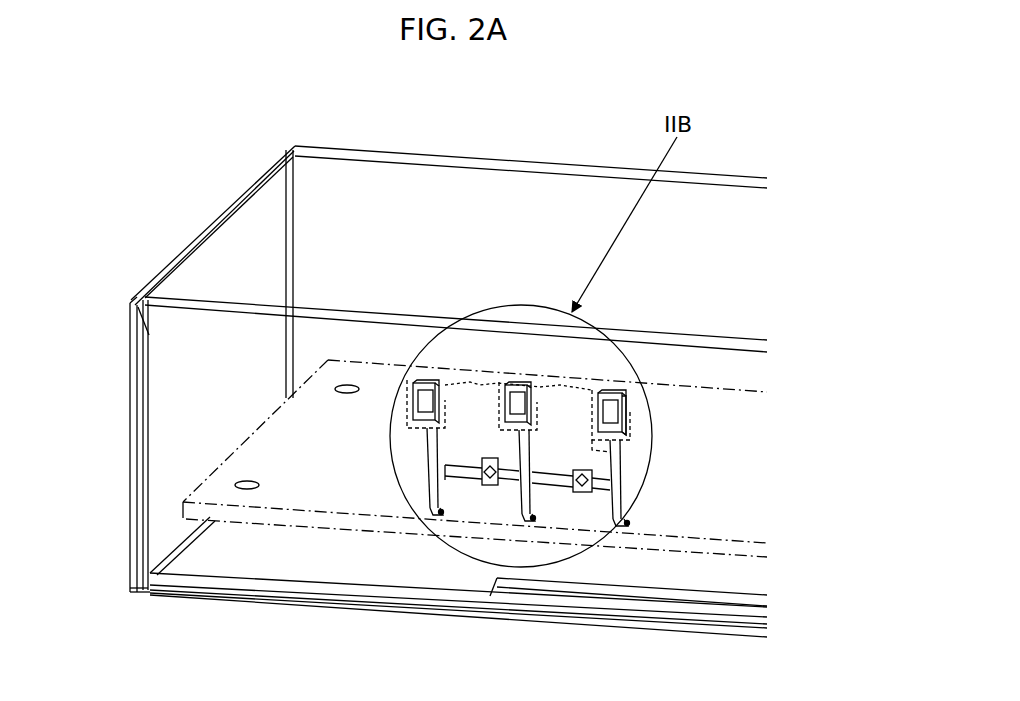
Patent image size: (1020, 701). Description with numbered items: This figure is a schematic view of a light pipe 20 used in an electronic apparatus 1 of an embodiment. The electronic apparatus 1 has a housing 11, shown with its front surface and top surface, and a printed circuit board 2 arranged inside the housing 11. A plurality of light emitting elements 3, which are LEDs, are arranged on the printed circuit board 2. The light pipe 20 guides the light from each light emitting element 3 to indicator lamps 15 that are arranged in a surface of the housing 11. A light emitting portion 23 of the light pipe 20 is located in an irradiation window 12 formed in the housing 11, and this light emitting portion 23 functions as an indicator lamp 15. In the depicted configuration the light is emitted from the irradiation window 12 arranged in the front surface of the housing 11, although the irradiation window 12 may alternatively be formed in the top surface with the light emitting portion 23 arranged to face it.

The electronic apparatus 1 is at (209, 122).
The housing 11 is at (362, 148).
The printed circuit board 2 is at (733, 387).
The light pipe 20 is at (657, 408).
The light emitting portion 23 is at (600, 437).
The irradiation window 12 is at (623, 433).
The indicator lamp 15 is at (818, 460).
The light emitting element (LED) 3 is at (627, 525).